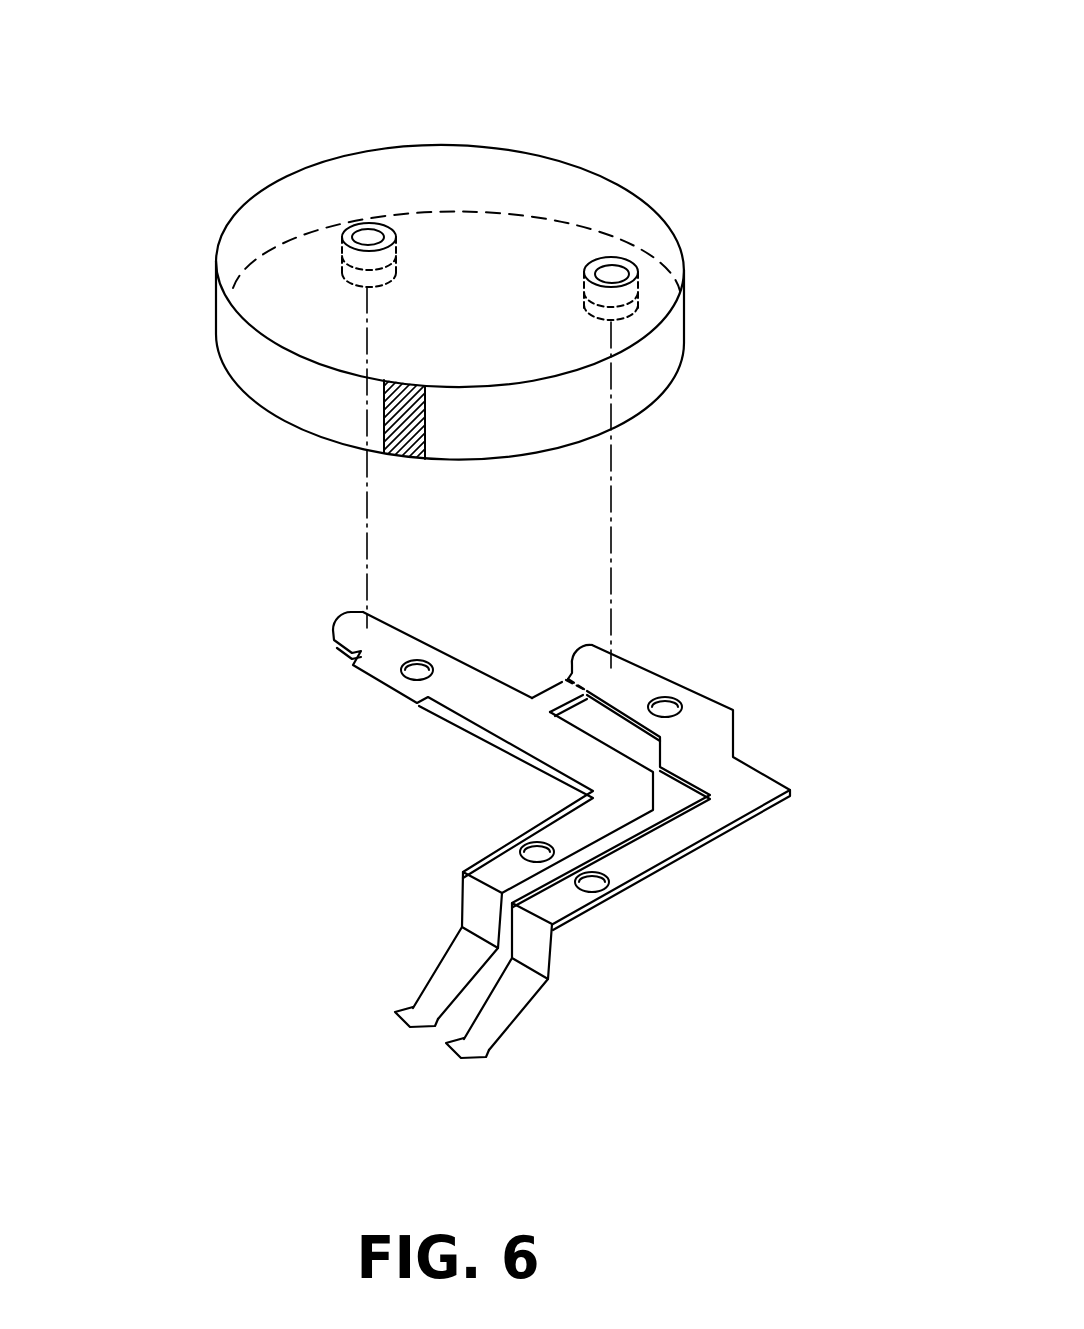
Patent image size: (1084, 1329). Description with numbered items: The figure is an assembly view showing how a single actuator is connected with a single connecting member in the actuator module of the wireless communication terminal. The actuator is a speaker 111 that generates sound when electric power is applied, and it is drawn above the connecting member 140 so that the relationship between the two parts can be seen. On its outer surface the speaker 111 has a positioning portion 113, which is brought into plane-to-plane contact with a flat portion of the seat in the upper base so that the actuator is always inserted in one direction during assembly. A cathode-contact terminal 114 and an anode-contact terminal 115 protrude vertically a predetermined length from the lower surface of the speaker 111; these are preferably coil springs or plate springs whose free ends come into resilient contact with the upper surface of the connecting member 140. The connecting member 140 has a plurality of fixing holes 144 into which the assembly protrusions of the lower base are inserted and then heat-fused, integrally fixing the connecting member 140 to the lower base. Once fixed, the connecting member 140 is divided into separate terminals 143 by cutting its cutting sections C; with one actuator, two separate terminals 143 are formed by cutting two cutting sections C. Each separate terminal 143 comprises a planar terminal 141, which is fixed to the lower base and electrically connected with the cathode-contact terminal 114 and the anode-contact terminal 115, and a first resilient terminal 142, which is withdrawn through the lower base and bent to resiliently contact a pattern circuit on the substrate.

The speaker 111 is at (668, 347).
The positioning portion 113 is at (357, 447).
The cathode-contact terminal 114 is at (386, 243).
The anode-contact terminal 115 is at (634, 266).
The connecting member 140 is at (438, 794).
The planar terminal 141 is at (490, 713).
The first resilient terminal 142 is at (452, 957).
The separate terminals 143 is at (459, 794).
The fixing holes 144 is at (670, 700).
The cutting section C is at (553, 695).